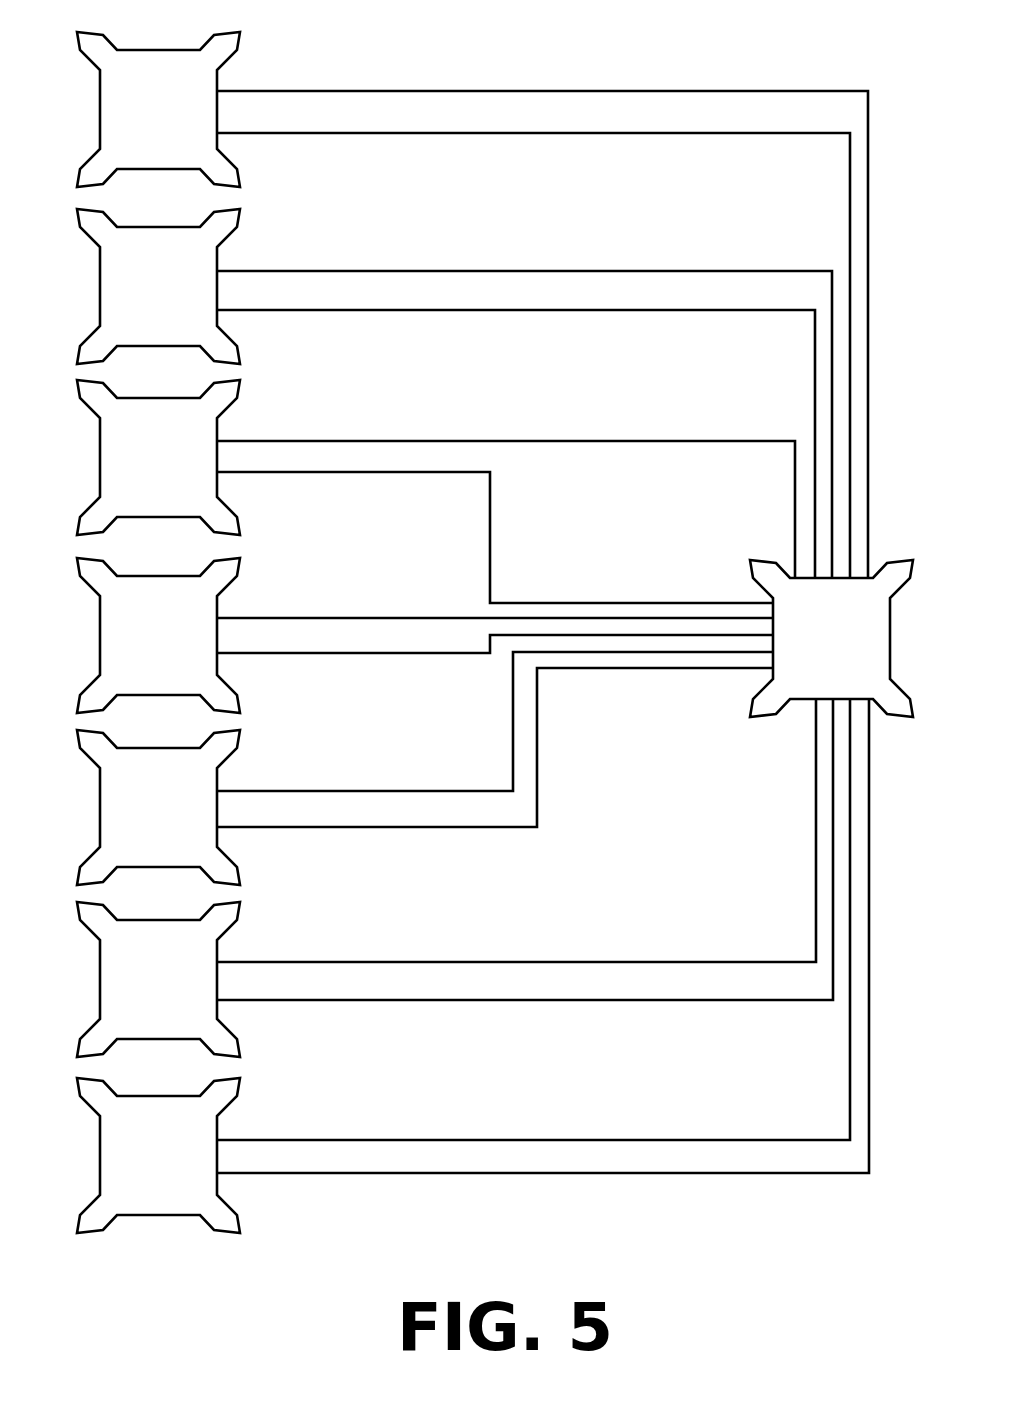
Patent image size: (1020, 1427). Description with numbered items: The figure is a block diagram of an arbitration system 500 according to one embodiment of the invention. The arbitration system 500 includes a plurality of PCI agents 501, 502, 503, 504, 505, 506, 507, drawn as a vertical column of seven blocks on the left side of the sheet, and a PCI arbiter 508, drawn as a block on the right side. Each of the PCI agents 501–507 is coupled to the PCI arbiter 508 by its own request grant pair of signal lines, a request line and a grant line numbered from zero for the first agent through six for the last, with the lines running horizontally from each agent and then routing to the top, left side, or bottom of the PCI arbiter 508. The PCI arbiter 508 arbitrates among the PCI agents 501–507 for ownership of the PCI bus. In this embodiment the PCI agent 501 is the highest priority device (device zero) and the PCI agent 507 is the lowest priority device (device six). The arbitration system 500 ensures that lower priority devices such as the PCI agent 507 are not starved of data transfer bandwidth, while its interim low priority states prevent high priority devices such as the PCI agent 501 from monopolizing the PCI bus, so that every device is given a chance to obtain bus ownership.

The arbitration system 500 is at (888, 39).
The PCI agent 501 is at (242, 44).
The PCI agent 502 is at (242, 221).
The PCI agent 503 is at (242, 392).
The PCI agent 504 is at (242, 570).
The PCI agent 505 is at (242, 742).
The PCI agent 506 is at (242, 914).
The PCI agent 507 is at (242, 1090).
The PCI arbiter 508 is at (750, 565).